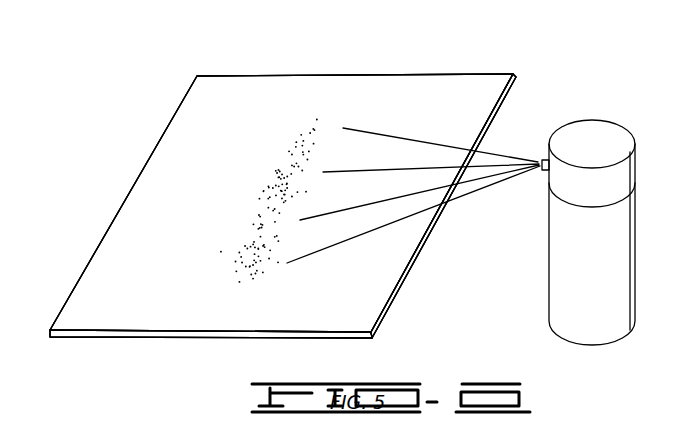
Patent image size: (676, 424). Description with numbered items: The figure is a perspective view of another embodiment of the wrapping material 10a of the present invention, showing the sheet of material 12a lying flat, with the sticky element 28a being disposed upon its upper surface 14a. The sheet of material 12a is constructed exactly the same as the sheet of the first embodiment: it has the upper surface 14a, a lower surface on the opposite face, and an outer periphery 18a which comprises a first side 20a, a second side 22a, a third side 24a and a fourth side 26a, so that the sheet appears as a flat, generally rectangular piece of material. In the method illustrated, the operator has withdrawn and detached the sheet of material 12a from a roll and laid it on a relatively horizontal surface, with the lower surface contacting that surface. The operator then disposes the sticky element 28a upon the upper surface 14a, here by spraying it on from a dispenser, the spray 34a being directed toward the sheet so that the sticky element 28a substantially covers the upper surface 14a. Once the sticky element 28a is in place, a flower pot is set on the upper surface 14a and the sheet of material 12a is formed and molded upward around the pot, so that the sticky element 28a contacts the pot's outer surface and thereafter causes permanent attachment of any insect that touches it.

The wrapping material 10a is at (273, 68).
The sheet of material 12a is at (412, 72).
The upper surface 14a is at (350, 303).
The outer periphery 18a is at (285, 339).
The first side 20a is at (422, 245).
The second side 22a is at (125, 200).
The third side 24a is at (152, 339).
The fourth side 26a is at (240, 76).
The sticky element 28a is at (315, 142).
The spray stream from aerosol can 34a is at (613, 423).